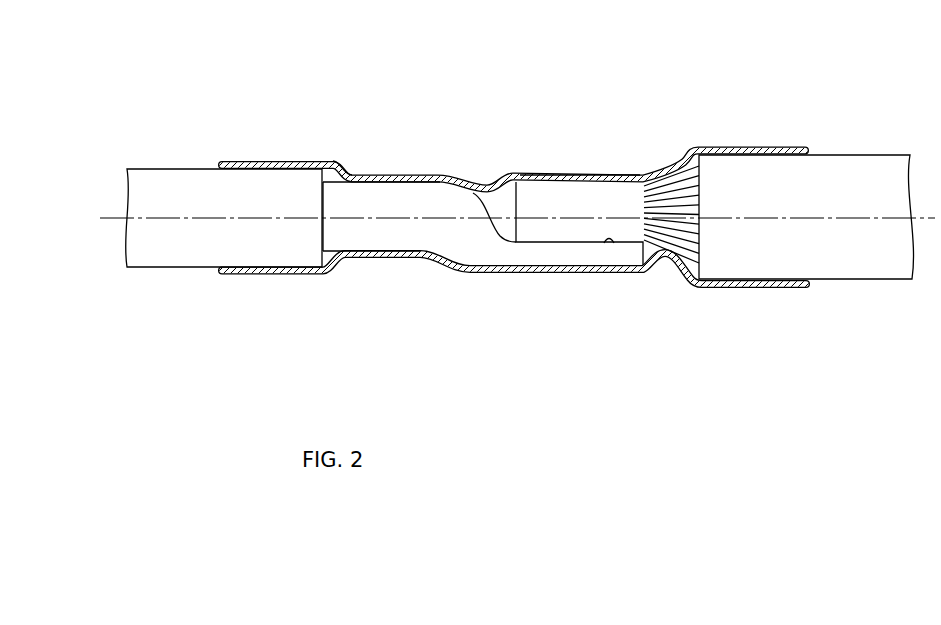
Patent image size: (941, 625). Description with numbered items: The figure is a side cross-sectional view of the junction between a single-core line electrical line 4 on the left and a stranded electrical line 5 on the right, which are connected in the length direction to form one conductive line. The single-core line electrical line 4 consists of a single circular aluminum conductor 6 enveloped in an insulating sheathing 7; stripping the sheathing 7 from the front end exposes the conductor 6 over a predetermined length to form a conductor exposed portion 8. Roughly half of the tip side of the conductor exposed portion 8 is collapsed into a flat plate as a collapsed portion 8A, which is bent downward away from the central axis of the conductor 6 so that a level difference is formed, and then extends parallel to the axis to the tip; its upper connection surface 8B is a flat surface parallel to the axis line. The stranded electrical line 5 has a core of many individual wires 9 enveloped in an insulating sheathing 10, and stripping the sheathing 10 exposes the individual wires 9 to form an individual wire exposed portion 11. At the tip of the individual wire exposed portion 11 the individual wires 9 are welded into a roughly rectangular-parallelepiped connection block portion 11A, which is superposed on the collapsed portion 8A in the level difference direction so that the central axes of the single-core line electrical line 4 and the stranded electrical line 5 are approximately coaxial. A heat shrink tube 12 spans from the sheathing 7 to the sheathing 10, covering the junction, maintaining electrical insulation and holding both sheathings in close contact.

The single-core line electrical line 4 is at (283, 224).
The stranded electrical line 5 is at (779, 218).
The conductor 6 is at (338, 238).
The sheathing 7 is at (192, 180).
The conductor exposed portion 8 is at (515, 273).
The collapsed portion 8A is at (552, 257).
The connection surface 8B is at (614, 243).
The individual wires 9 is at (683, 168).
The sheathing 10 is at (870, 260).
The individual wire exposed portion 11 is at (680, 240).
The connection block portion 11A is at (586, 198).
The heat shrink tube 12 is at (356, 178).